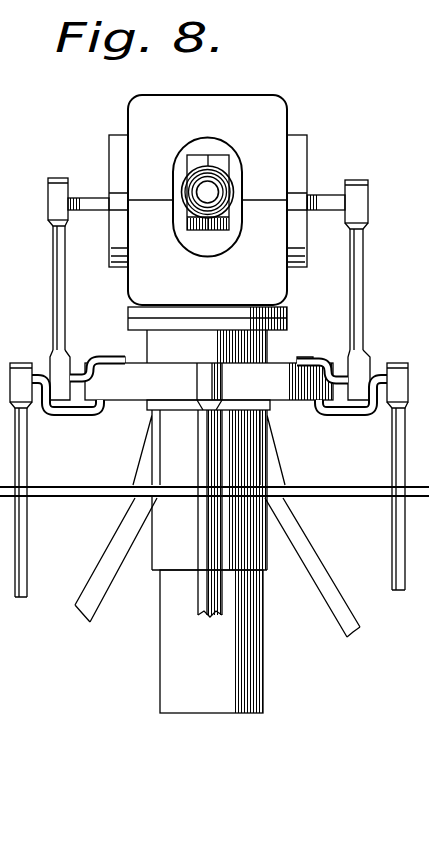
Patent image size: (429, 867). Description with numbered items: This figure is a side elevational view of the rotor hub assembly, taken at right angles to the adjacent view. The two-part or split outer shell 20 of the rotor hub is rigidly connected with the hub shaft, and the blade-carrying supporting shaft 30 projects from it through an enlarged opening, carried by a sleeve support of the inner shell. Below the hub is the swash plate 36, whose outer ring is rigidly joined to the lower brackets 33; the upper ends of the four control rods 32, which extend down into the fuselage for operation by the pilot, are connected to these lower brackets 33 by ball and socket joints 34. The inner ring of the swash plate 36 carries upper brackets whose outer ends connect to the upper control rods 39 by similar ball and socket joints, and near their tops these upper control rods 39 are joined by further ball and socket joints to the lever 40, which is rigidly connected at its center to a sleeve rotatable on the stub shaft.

The rotor hub outer shell 20 is at (268, 99).
The supporting shaft 30 is at (203, 168).
The ball and socket joint 34 is at (224, 180).
The lever 40 is at (82, 200).
The upper control rod 39 is at (52, 315).
The swash plate 36 is at (87, 357).
The lower bracket 33 is at (72, 408).
The control rod 32 is at (28, 535).